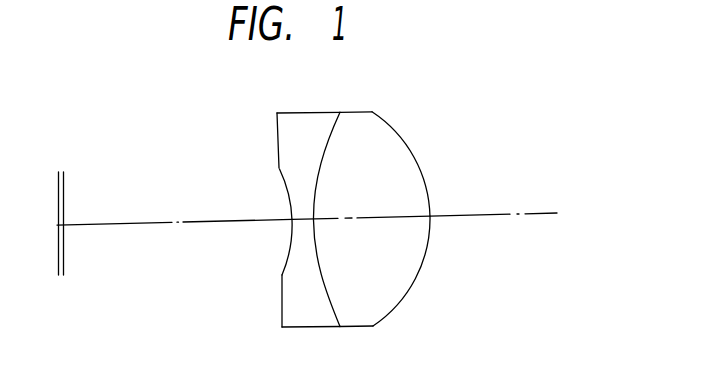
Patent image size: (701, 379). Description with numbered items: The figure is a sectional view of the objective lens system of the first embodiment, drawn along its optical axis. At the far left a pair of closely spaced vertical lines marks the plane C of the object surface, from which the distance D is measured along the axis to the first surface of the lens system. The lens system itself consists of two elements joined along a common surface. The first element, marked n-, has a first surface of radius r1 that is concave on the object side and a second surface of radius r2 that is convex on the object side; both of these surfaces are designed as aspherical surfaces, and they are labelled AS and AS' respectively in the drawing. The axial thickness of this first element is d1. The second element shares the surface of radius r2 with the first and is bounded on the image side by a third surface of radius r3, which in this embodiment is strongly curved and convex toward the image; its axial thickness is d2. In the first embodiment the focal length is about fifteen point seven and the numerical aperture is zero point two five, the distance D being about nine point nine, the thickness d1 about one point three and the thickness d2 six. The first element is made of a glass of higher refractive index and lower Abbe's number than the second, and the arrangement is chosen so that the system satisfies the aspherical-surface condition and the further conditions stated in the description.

The reference plane (object/cornea plane) C is at (61, 209).
The distance from the object surface to the first surface D is at (166, 222).
The aspheric surface (first surface) AS is at (264, 219).
The aspheric surface (cemented surface) AS' is at (330, 200).
The negative lens element n- is at (297, 200).
The thickness of the first lens element d1 is at (302, 218).
The thickness of the second lens element d2 is at (372, 217).
The radius of curvature of the first surface r1 is at (283, 262).
The radius of curvature of the second surface r2 is at (320, 260).
The radius of curvature of the third surface r3 is at (420, 267).